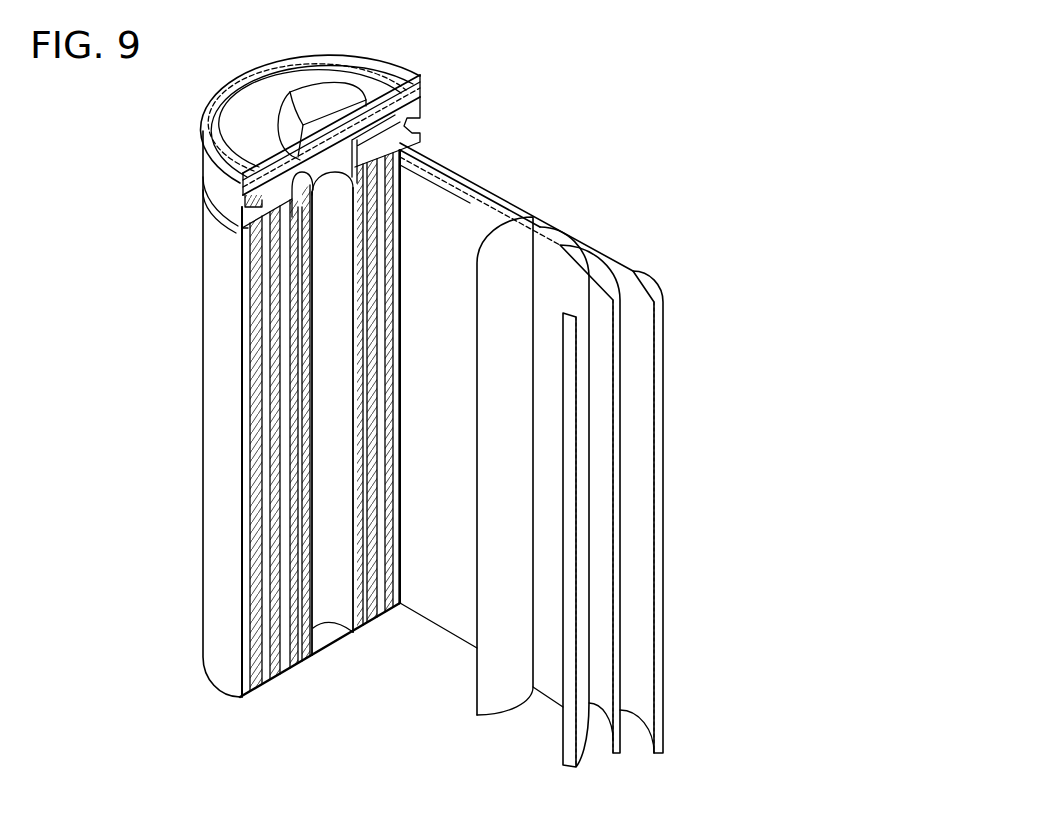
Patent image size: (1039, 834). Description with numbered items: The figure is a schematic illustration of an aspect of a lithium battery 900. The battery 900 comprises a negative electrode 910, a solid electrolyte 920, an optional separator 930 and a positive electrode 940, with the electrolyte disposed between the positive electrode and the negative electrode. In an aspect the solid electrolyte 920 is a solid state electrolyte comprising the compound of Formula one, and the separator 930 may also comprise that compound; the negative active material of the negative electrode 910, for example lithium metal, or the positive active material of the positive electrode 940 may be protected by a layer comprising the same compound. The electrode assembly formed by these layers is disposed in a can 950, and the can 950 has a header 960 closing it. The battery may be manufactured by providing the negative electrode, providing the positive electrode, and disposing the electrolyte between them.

The battery 900 is at (579, 79).
The negative electrode 910 is at (483, 197).
The solid electrolyte 920 is at (552, 233).
The separator 930 is at (603, 260).
The positive electrode 940 is at (653, 284).
The can 950 is at (218, 412).
The header 960 is at (313, 96).